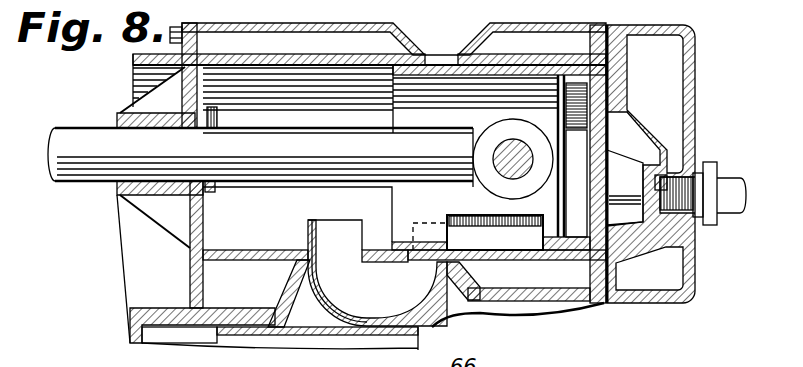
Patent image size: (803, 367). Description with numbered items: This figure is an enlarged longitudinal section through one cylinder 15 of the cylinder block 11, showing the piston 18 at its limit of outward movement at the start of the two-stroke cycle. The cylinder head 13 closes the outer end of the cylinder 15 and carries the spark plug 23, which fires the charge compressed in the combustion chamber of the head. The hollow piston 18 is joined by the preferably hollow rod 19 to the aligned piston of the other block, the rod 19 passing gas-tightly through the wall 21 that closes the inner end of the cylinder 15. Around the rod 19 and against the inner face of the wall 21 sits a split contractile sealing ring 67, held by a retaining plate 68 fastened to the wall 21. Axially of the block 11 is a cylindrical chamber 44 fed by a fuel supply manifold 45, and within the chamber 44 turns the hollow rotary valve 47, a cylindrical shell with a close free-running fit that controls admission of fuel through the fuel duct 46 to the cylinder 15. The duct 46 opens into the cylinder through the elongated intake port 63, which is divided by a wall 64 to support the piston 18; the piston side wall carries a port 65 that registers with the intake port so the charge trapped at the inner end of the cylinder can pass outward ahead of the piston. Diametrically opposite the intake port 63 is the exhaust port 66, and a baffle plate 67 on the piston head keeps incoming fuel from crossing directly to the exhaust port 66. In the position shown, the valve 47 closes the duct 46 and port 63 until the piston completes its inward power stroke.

The cylinder block 11 is at (546, 26).
The cylinder head 13 is at (697, 86).
The cylinder 15 is at (297, 214).
The piston 18 is at (414, 117).
The rod 19 is at (64, 182).
The wall 21 is at (193, 217).
The spark plug 23 is at (726, 180).
The cylindrical chamber 44 is at (157, 338).
The fuel supply manifold 45 is at (143, 273).
The fuel duct 46 is at (292, 293).
The hollow rotary valve 47 is at (352, 334).
The port 63 is at (377, 273).
The wall 64 is at (369, 264).
The port 65 is at (473, 218).
The exhaust port 66 is at (438, 47).
The sealing ring 67 is at (218, 118).
The retaining plate 68 is at (212, 192).